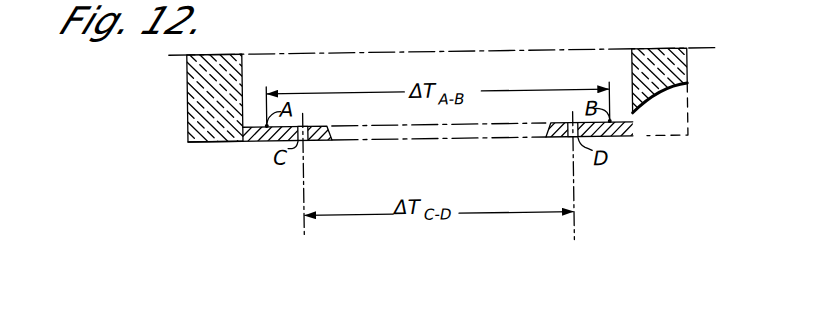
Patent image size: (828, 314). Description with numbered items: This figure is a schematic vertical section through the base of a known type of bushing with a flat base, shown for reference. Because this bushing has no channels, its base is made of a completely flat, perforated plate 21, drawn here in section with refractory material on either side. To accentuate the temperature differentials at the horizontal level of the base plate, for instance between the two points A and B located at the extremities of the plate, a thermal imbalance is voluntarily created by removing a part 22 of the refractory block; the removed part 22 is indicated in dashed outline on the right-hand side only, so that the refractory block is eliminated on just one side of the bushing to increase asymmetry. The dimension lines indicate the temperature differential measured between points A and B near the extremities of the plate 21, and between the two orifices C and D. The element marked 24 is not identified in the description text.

The perforated plate 21 is at (410, 143).
The removed part of refractory block 22 is at (680, 123).
The center line of housing bore 24 is at (563, 86).